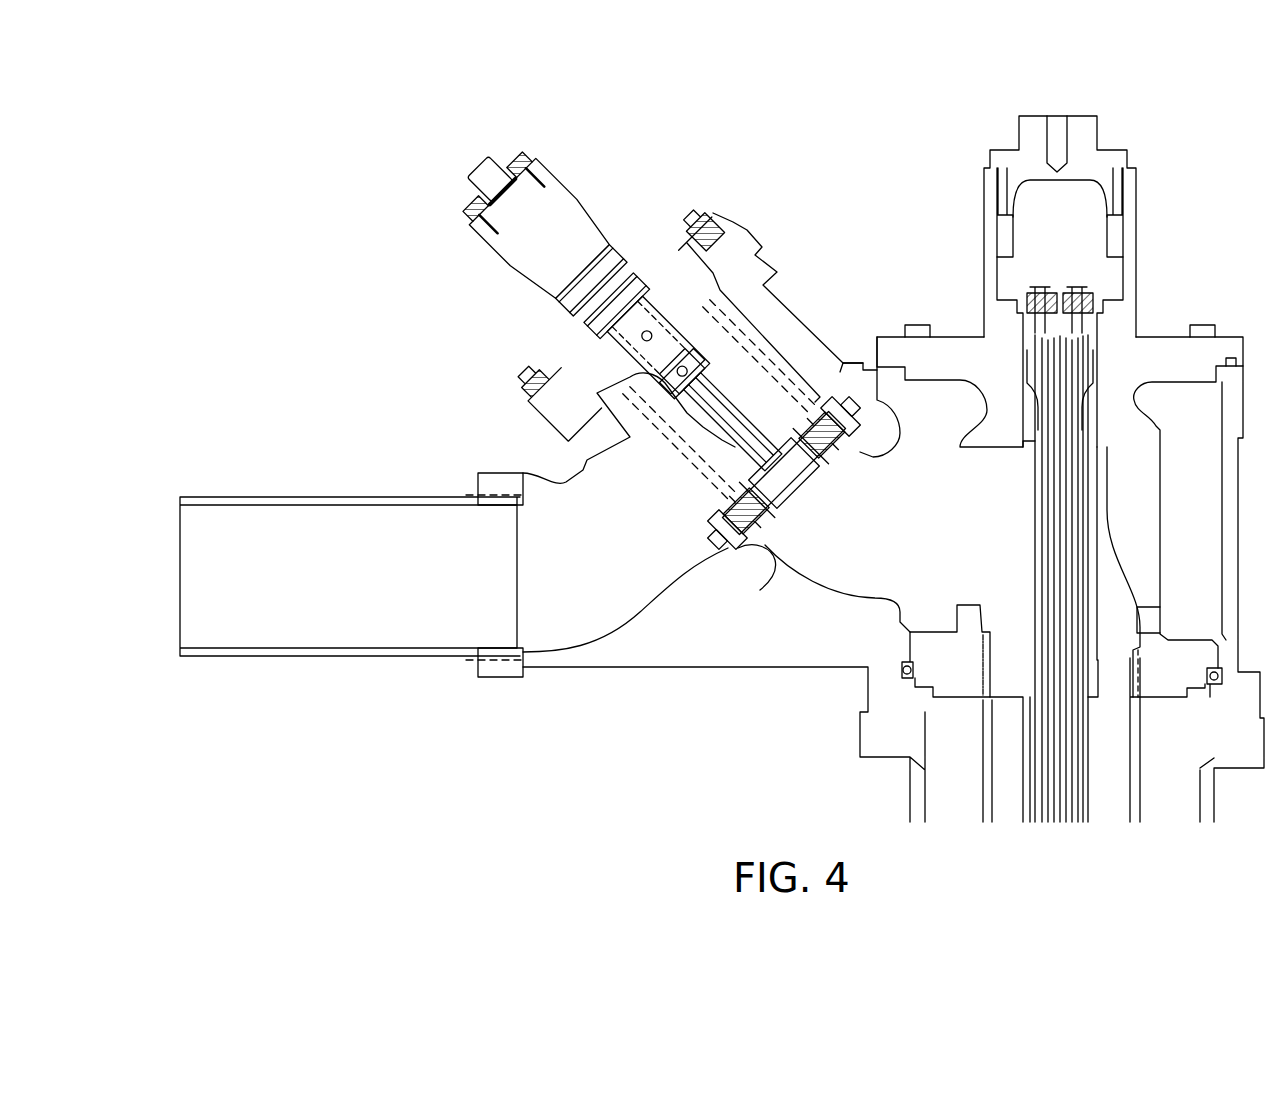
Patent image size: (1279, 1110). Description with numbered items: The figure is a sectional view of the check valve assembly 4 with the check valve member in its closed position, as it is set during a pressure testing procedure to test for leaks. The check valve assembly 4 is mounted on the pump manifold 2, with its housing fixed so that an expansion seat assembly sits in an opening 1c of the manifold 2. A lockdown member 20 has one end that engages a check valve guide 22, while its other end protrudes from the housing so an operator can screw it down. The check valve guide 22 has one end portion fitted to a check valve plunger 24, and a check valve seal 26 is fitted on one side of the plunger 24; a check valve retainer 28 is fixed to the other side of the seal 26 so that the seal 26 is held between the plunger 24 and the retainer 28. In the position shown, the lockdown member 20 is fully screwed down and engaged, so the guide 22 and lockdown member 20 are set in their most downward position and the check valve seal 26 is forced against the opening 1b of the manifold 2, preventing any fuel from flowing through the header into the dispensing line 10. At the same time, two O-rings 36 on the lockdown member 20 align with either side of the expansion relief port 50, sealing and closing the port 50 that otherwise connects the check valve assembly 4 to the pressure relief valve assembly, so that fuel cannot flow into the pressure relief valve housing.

The pump manifold 2 is at (1172, 97).
The check valve assembly 4 is at (405, 292).
The dispensing line 10 is at (355, 656).
The lockdown member 20 is at (507, 160).
The check valve guide 22 is at (735, 425).
The check valve plunger 24 is at (828, 400).
The check valve seal 26 is at (738, 533).
The check valve retainer 28 is at (832, 458).
The O-rings 36 is at (625, 345).
The expansion relief port 50 is at (600, 268).
The opening of the pump manifold 1b is at (775, 565).
The opening of the manifold 1c is at (590, 395).